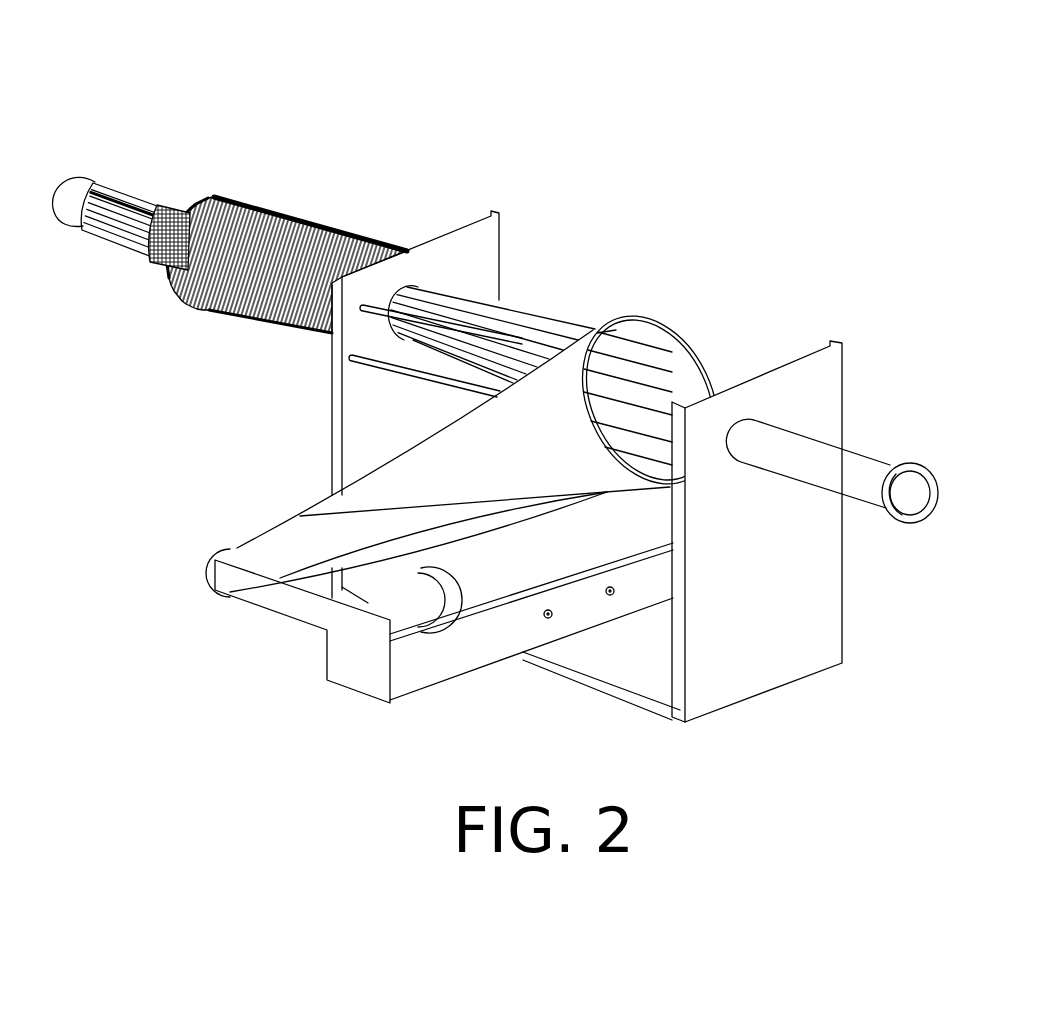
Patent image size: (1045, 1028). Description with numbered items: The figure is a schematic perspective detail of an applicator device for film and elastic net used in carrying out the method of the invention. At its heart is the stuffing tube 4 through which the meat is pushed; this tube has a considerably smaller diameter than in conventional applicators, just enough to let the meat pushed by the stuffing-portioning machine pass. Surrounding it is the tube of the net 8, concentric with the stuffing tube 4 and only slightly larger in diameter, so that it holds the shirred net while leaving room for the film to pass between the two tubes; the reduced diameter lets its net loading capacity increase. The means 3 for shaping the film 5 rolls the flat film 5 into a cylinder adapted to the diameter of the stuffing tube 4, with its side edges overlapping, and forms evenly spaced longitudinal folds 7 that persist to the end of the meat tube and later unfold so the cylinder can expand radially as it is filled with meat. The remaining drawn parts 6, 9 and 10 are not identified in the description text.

The means for shaping the film 3 is at (683, 343).
The stuffing tube 4 is at (82, 185).
The film 5 is at (505, 578).
The support bracket 6 is at (348, 652).
The longitudinal folds 7 is at (123, 197).
The tube of the net 8 is at (177, 203).
The cylindrical housing 9 is at (277, 203).
The support plate 10 is at (793, 603).